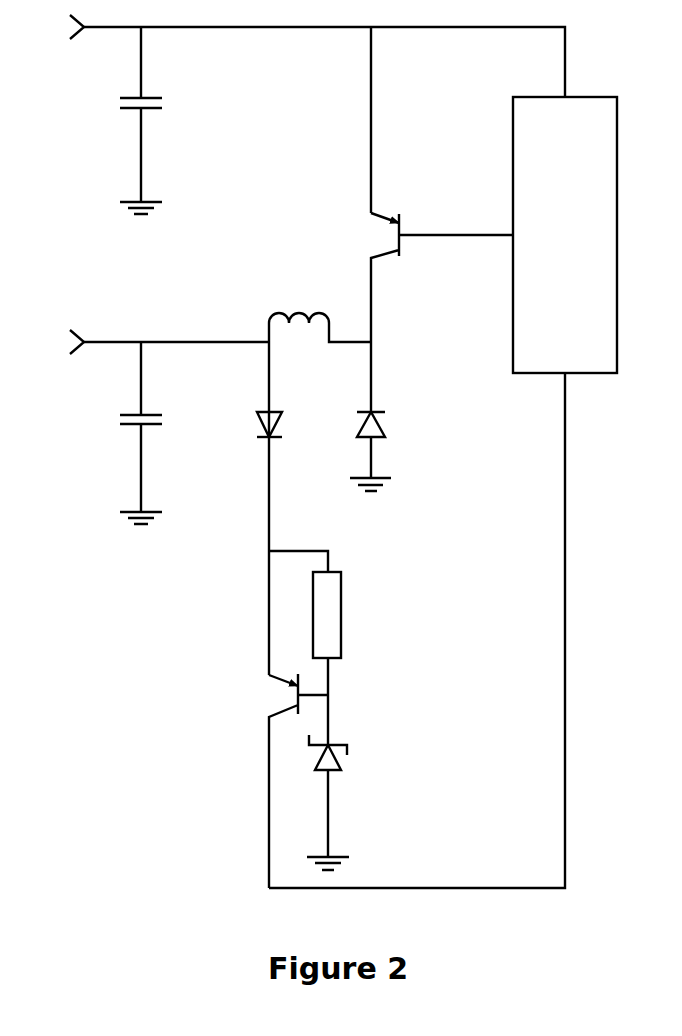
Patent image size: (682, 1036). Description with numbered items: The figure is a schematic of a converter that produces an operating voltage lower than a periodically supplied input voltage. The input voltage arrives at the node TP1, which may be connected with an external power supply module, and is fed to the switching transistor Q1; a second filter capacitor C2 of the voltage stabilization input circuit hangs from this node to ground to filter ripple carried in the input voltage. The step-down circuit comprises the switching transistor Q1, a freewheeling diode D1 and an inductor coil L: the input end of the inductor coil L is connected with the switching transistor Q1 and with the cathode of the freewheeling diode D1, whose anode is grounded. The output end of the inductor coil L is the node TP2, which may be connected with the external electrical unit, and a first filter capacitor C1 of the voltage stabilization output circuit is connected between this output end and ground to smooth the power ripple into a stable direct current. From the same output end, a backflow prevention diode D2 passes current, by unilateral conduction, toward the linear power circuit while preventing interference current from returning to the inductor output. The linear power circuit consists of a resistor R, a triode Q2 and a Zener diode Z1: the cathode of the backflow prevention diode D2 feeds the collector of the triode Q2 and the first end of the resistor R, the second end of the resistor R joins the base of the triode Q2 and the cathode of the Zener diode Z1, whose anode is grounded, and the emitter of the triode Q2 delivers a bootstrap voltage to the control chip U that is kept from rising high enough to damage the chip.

The node TP1 is at (53, 27).
The node TP2 is at (146, 342).
The first filter capacitor C1 is at (157, 433).
The second filter capacitor C2 is at (160, 120).
The inductor coil L is at (320, 312).
The switching transistor Q1 is at (428, 184).
The triode Q2 is at (284, 781).
The freewheeling diode D1 is at (387, 416).
The backflow prevention diode D2 is at (289, 508).
The resistor R is at (321, 623).
The Zener diode Z1 is at (348, 782).
The control chip U is at (551, 235).